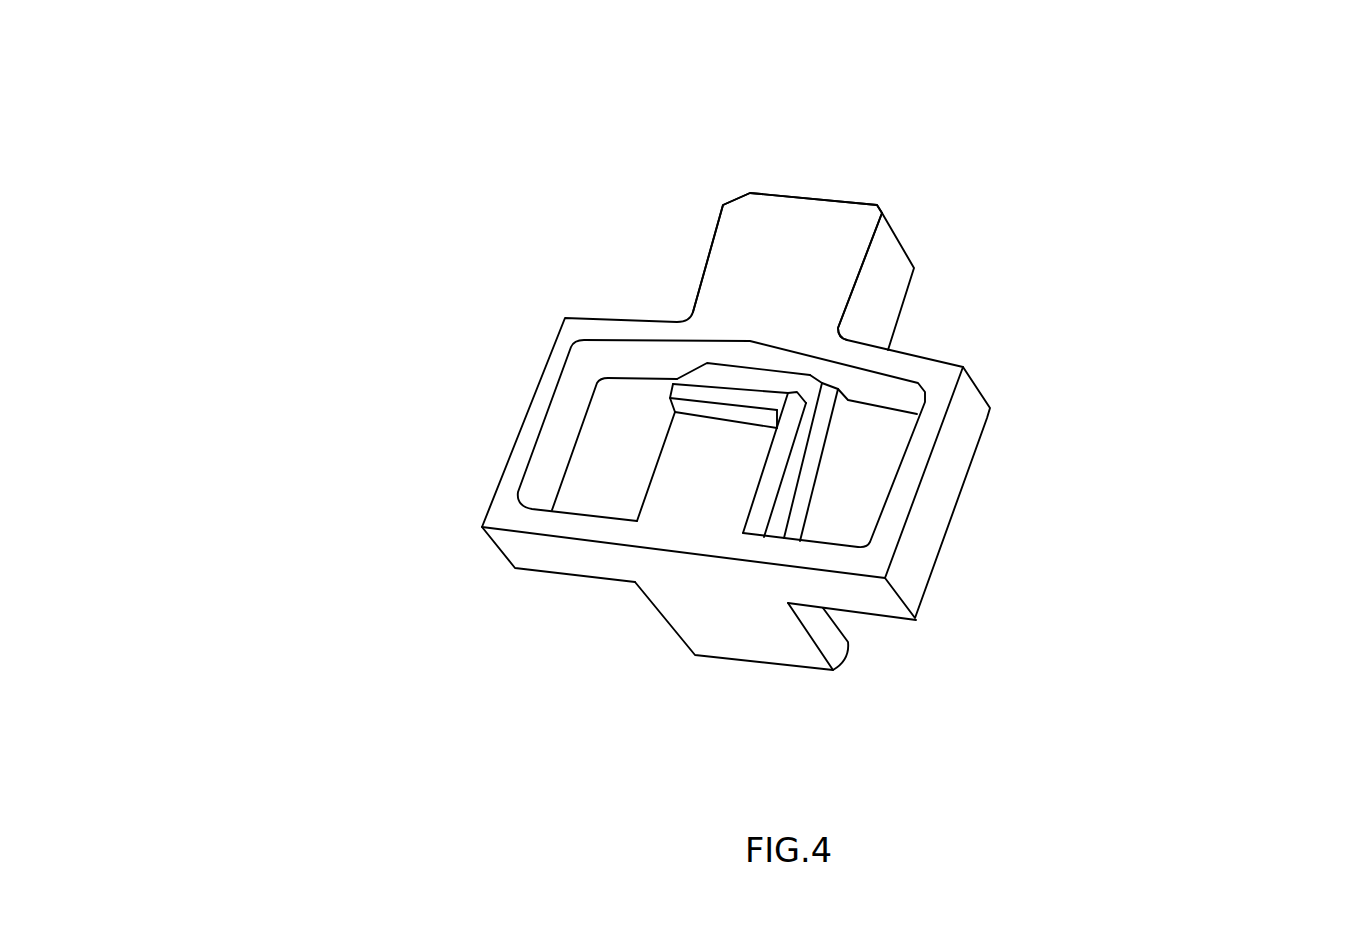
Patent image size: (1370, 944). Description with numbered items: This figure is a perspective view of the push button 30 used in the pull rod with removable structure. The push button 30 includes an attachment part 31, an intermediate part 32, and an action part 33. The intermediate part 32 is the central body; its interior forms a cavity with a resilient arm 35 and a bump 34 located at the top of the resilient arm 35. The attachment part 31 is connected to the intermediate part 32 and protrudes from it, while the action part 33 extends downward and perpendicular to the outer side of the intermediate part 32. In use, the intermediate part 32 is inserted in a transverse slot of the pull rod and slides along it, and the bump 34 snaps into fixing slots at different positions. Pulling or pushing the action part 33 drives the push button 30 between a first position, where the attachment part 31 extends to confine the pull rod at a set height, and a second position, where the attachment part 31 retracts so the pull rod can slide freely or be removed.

The push button 30 is at (312, 103).
The attachment part 31 is at (815, 275).
The intermediate part 32 is at (925, 470).
The action part 33 is at (763, 655).
The bump 34 is at (725, 403).
The resilient arm 35 is at (705, 478).